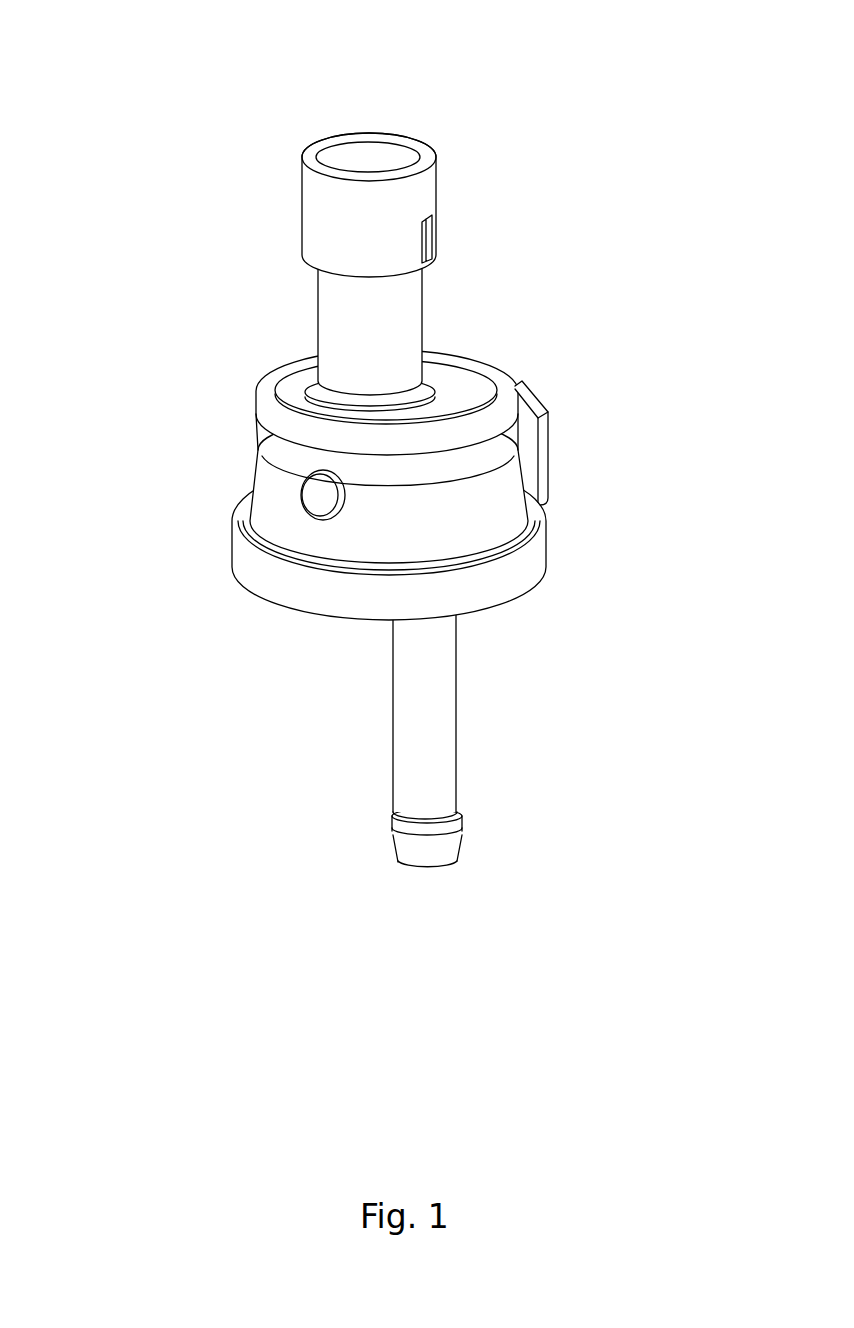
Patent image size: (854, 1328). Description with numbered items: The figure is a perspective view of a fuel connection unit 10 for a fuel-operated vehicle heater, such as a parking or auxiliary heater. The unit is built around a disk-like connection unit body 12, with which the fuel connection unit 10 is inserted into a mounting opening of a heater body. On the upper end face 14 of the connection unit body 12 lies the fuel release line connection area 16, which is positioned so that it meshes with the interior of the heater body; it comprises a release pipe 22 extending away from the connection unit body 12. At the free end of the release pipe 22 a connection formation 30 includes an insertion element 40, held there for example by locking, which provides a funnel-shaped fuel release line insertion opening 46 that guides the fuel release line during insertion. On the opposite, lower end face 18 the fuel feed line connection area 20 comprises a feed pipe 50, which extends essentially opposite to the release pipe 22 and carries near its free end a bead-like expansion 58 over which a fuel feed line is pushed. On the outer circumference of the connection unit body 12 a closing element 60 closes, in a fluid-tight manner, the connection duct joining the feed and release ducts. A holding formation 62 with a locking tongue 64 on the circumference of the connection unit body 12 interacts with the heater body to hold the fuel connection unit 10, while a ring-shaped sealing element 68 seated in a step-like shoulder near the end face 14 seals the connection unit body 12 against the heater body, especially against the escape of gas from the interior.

The fuel connection unit 10 is at (400, 460).
The connection unit body 12 is at (400, 531).
The end face 14 is at (400, 379).
The fuel release line connection area 16 is at (321, 206).
The end face 18 is at (335, 632).
The fuel feed line connection area 20 is at (495, 751).
The release pipe 22 is at (422, 322).
The connection formation 30 is at (388, 147).
The insertion element 40 is at (302, 186).
The fuel release line insertion opening 46 is at (347, 155).
The feed pipe 50 is at (547, 785).
The bead-like expansion 58 is at (393, 825).
The closing element 60 is at (290, 497).
The holding formation 62 is at (619, 430).
The locking tongue 64 is at (547, 423).
The ring-shaped sealing element 68 is at (265, 393).